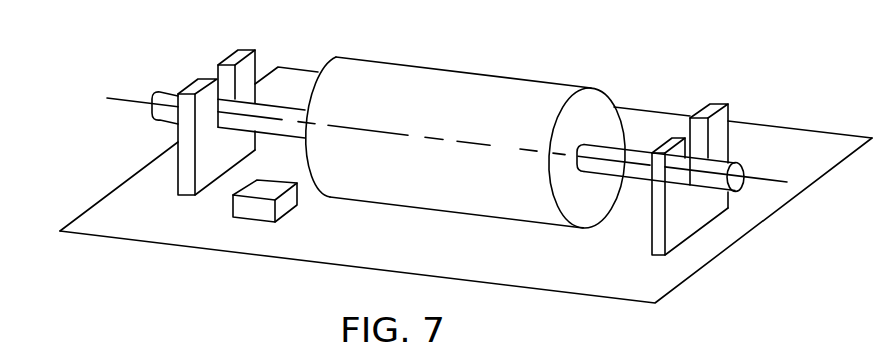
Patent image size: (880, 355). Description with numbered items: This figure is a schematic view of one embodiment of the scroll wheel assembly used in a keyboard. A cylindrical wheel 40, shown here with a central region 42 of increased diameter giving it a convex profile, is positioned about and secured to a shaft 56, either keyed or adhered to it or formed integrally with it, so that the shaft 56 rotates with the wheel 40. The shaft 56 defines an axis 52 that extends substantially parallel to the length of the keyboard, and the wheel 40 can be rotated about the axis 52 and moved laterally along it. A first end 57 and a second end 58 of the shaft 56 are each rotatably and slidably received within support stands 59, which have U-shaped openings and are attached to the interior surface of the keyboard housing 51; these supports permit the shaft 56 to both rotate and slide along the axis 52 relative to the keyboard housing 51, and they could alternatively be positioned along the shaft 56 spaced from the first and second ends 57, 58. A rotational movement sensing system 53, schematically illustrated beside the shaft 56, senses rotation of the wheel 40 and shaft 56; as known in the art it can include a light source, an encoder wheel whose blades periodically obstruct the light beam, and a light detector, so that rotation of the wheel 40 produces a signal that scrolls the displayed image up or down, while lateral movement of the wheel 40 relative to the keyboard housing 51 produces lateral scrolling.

The wheel 40 is at (468, 74).
The central region 42 is at (617, 107).
The keyboard housing 51 is at (356, 256).
The axis 52 is at (365, 130).
The rotational movement sensing system 53 is at (285, 204).
The shaft 56 is at (737, 164).
The first end 57 is at (155, 101).
The second end 58 is at (733, 191).
The support stands 59 is at (183, 170).